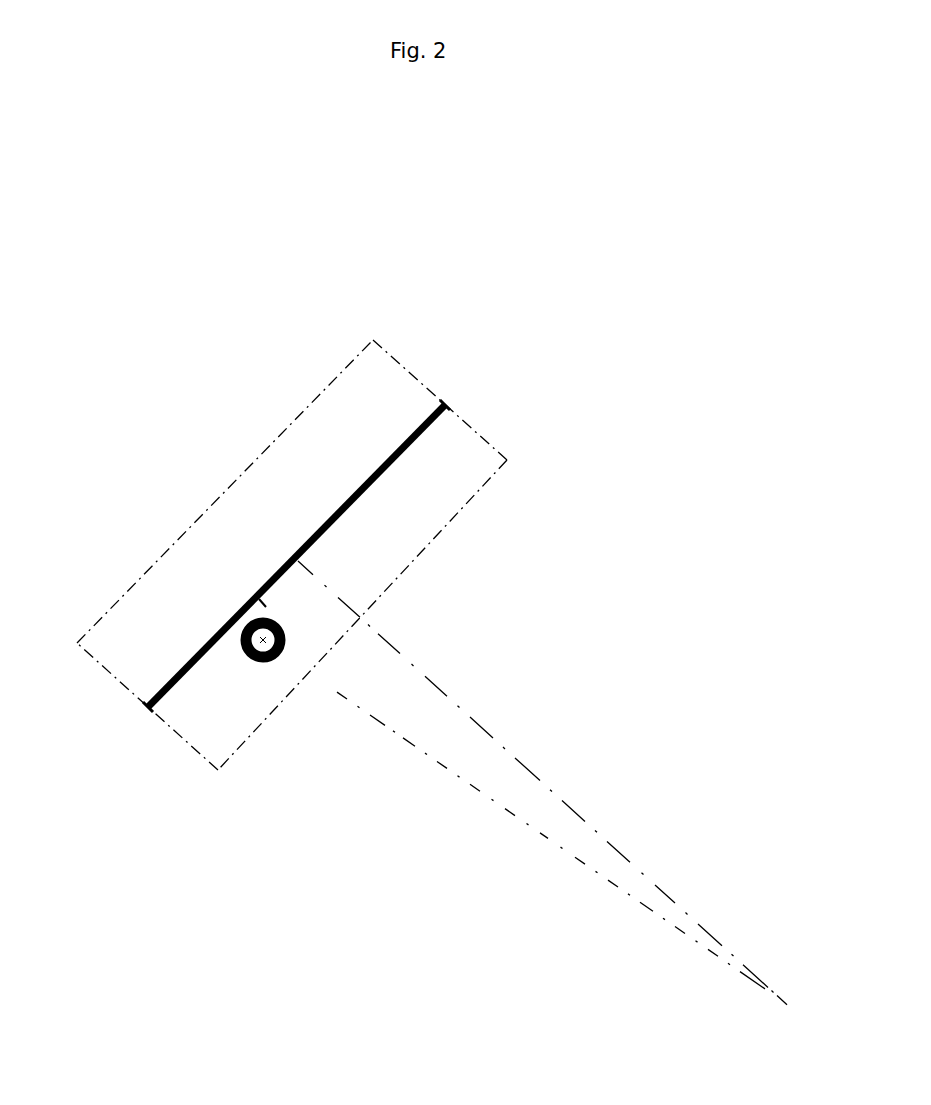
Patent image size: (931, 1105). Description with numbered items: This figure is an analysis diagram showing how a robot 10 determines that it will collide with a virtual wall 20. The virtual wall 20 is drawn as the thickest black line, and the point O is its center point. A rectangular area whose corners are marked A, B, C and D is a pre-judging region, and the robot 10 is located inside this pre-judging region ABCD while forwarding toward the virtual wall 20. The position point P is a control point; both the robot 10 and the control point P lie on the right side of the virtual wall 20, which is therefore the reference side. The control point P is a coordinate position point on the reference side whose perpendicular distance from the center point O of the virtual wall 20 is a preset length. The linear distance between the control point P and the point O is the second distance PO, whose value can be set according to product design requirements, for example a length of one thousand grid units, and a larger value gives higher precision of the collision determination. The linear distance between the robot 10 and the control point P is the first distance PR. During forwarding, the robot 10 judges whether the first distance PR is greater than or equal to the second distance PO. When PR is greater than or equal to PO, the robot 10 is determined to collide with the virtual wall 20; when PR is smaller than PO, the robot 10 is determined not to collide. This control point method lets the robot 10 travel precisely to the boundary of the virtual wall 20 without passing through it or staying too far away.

The robot 10 is at (272, 663).
The virtual wall 20 is at (328, 520).
The corner point A of pre-judging region A is at (205, 493).
The corner point B of pre-judging region B is at (430, 379).
The corner point C of pre-judging region C is at (384, 609).
The corner point D of pre-judging region D is at (165, 727).
The center point of the virtual wall O is at (296, 570).
The control point P is at (814, 1016).
The second distance PO is at (542, 783).
The first distance PR is at (551, 840).